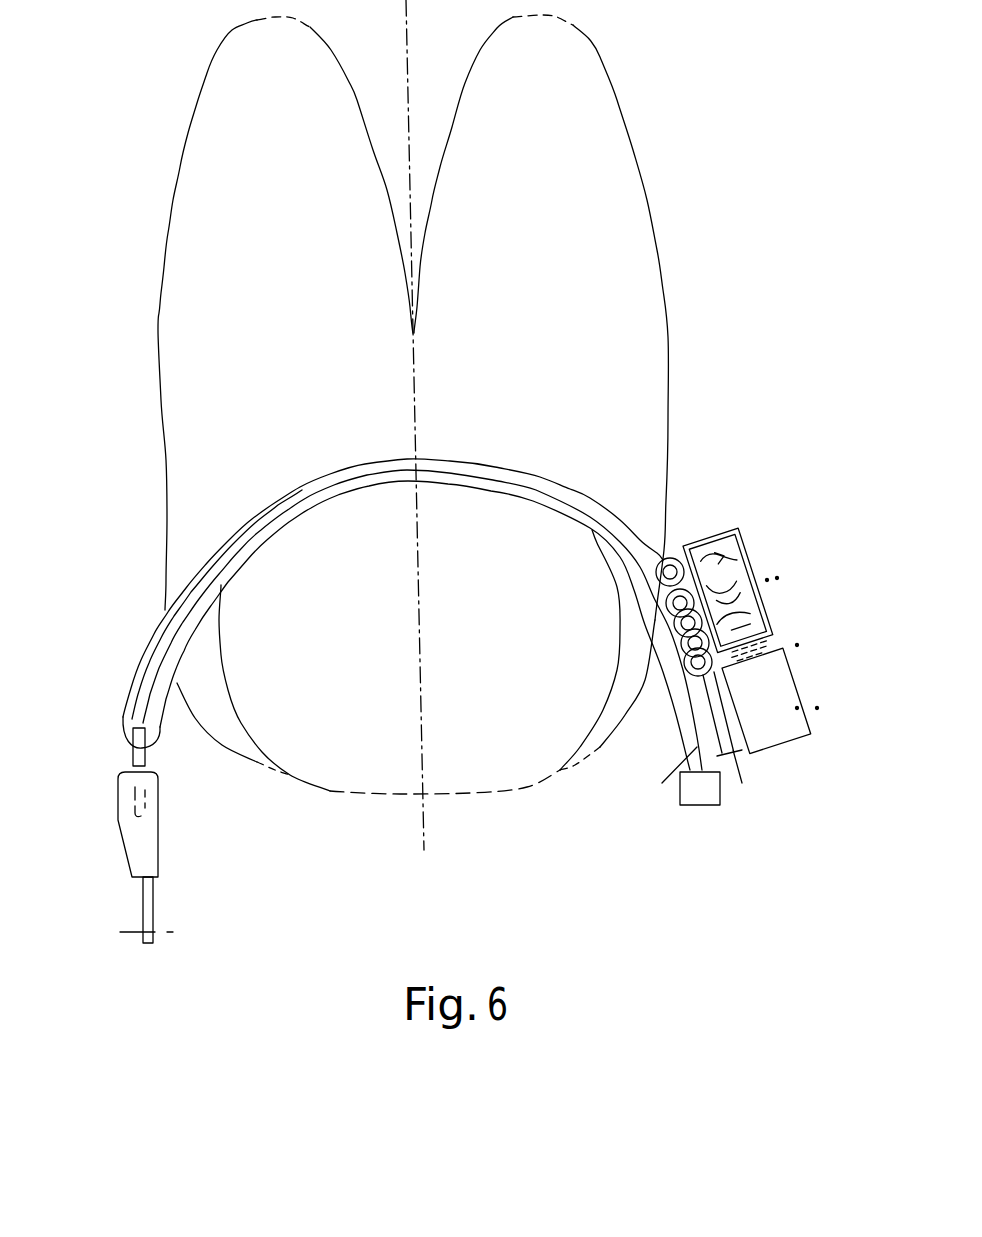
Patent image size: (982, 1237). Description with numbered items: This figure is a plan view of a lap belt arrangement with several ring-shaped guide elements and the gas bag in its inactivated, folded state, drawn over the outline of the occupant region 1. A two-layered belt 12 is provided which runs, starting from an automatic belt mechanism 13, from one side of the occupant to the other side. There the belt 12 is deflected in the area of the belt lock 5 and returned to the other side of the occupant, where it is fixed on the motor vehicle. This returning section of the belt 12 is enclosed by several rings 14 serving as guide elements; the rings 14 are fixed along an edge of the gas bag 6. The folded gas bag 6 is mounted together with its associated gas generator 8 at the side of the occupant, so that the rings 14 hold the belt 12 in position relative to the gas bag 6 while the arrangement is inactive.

The body / wearer's head region 1 is at (240, 328).
The belt lock 5 is at (150, 818).
The gas bag 6 is at (753, 548).
The gas generator 8 is at (790, 690).
The belt 12 is at (147, 670).
The automatic belt mechanism 13 is at (702, 793).
The rings 14 is at (693, 545).